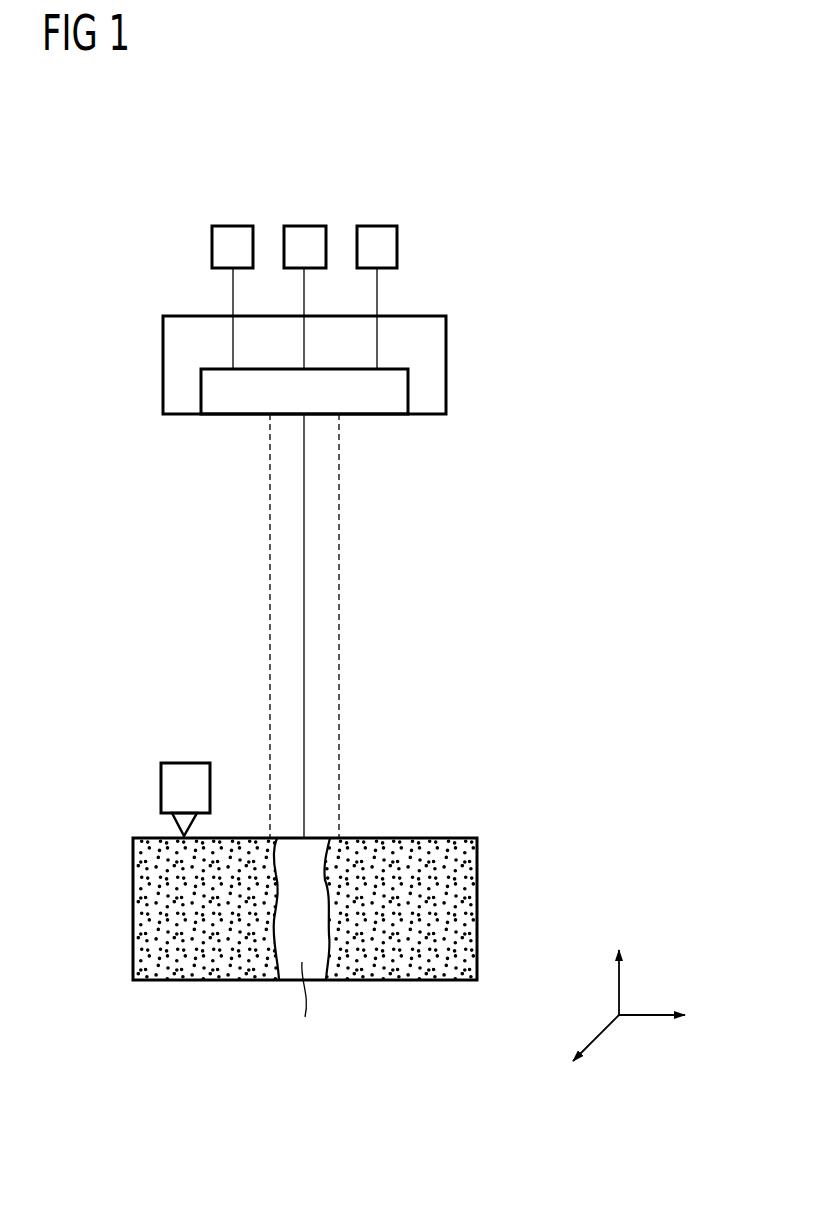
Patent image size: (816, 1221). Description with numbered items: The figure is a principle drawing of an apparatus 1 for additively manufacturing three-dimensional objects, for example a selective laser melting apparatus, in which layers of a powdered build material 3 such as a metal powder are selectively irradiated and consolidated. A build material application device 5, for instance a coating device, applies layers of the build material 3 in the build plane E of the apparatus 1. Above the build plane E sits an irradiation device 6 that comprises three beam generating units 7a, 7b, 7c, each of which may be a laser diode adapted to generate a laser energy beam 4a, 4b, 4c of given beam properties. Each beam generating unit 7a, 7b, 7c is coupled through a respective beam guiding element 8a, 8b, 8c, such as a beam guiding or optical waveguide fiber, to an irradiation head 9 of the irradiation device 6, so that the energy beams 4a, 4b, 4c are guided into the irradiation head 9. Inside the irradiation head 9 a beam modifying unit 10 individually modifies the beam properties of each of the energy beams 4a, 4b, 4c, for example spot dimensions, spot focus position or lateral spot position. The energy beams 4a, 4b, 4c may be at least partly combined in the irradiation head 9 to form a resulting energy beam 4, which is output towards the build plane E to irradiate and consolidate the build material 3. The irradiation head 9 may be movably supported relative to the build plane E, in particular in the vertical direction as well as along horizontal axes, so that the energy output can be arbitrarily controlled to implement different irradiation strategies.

The apparatus 1 is at (150, 200).
The build material 3 is at (463, 908).
The energy beam 4 is at (412, 680).
The energy beam 4a is at (268, 537).
The energy beam 4b is at (305, 608).
The energy beam 4c is at (340, 537).
The build material application device 5 is at (175, 745).
The irradiation device 6 is at (490, 258).
The beam generating unit 7a is at (228, 226).
The beam generating unit 7b is at (302, 226).
The beam generating unit 7c is at (375, 226).
The beam guiding element 8a is at (231, 295).
The beam guiding element 8b is at (303, 295).
The beam guiding element 8c is at (378, 293).
The irradiation head 9 is at (446, 358).
The beam modifying unit 10 is at (201, 387).
The build plane E is at (410, 820).